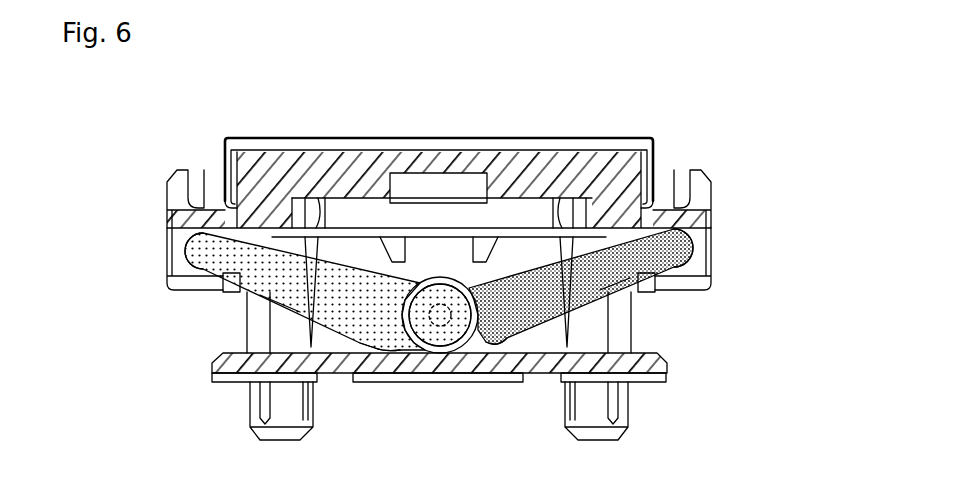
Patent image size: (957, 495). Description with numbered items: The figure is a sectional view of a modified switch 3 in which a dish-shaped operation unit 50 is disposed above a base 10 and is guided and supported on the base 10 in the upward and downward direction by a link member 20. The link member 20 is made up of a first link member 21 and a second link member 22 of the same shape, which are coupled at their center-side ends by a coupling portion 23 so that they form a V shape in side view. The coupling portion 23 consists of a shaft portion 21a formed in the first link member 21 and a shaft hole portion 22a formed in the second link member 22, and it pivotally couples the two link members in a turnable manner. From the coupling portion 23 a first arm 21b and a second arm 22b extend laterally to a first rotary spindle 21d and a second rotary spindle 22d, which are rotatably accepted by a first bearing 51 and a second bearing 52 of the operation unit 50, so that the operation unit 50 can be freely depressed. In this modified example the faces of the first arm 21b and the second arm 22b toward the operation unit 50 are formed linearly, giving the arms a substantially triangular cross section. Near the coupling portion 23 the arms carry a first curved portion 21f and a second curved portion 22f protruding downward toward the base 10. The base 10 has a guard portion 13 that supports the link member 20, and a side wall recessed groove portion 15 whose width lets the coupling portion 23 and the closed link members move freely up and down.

The switch 3 is at (720, 114).
The base 10 is at (668, 370).
The guard portion 13 is at (482, 346).
The side wall recessed groove portion 15 is at (472, 256).
The link member 20 is at (517, 259).
The first link member 21 is at (598, 352).
The shaft portion 21a is at (455, 360).
The first arm 21b is at (612, 275).
The first rotary spindle 21d is at (676, 250).
The first curved portion 21f is at (511, 346).
The second link member 22 is at (283, 270).
The shaft hole portion 22a is at (422, 307).
The second arm 22b is at (277, 287).
The second rotary spindle 22d is at (200, 251).
The second curved portion 22f is at (383, 346).
The coupling portion 23 is at (429, 356).
The operation unit 50 is at (609, 140).
The first bearing 51 is at (683, 232).
The second bearing 52 is at (212, 232).